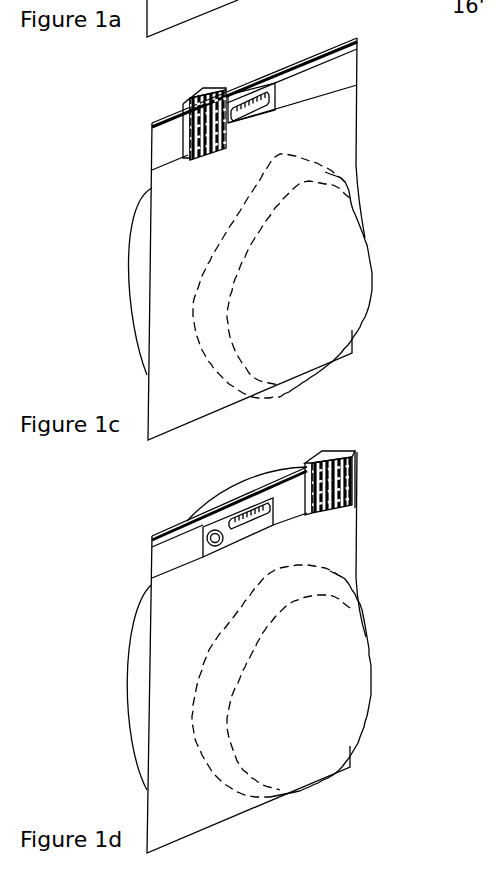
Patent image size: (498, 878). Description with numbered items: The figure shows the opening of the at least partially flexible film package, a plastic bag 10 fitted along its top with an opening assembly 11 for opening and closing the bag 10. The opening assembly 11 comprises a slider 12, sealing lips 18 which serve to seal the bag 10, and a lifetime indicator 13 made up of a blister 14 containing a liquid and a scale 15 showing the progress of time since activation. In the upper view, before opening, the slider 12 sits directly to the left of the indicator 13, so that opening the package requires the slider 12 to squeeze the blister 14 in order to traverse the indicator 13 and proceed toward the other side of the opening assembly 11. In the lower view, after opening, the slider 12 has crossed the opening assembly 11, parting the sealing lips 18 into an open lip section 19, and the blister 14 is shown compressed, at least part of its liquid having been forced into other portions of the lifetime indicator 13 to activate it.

In FIG. 1C, the plastic bag 10 is at (178, 283).
In FIG. 1D, the plastic bag 10 is at (174, 704).
In FIG. 1C, the opening assembly 11 is at (160, 147).
In FIG. 1D, the opening assembly 11 is at (136, 565).
In FIG. 1C, the slider 12 is at (228, 70).
In FIG. 1D, the slider 12 is at (359, 448).
In FIG. 1C, the lifetime indicator 13 is at (287, 128).
In FIG. 1D, the lifetime indicator 13 is at (267, 546).
In FIG. 1C, the blister 14 is at (244, 143).
In FIG. 1D, the blister 14 is at (233, 559).
In FIG. 1D, the scale 15 is at (288, 526).
In FIG. 1D, the sealing lips 18 is at (147, 522).
In FIG. 1D, the open lip section 19 is at (274, 463).